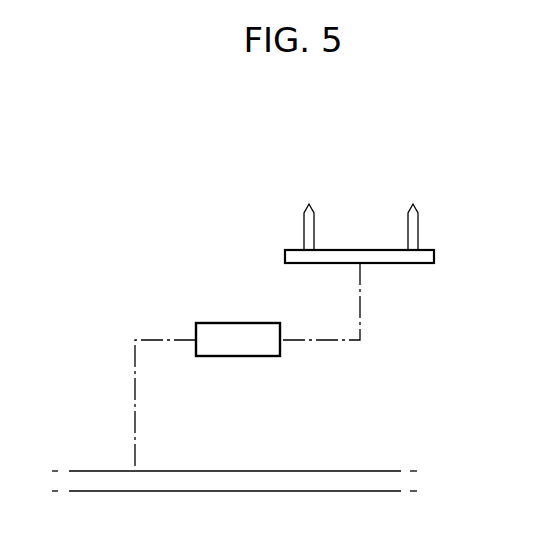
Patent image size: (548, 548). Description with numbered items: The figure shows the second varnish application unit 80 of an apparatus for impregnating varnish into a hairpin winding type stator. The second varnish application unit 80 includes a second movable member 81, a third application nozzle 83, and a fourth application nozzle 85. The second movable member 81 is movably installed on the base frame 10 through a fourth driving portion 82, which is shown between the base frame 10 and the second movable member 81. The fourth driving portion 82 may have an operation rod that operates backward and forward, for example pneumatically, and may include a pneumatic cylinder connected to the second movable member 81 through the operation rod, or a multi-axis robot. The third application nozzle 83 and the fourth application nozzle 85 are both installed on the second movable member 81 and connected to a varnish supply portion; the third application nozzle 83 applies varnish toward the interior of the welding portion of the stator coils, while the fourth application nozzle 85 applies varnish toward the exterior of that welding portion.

The base frame 10 is at (100, 470).
The second varnish application unit 80 is at (139, 213).
The second movable member 81 is at (396, 264).
The fourth driving portion 82 is at (238, 357).
The third application nozzle 83 is at (304, 222).
The fourth application nozzle 85 is at (418, 222).